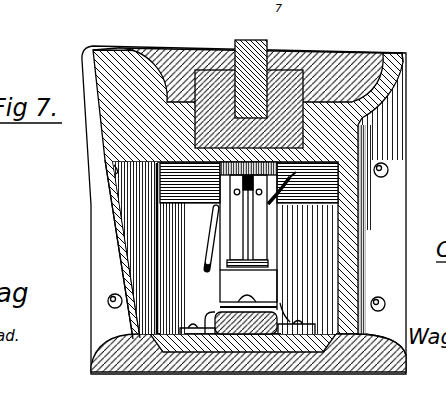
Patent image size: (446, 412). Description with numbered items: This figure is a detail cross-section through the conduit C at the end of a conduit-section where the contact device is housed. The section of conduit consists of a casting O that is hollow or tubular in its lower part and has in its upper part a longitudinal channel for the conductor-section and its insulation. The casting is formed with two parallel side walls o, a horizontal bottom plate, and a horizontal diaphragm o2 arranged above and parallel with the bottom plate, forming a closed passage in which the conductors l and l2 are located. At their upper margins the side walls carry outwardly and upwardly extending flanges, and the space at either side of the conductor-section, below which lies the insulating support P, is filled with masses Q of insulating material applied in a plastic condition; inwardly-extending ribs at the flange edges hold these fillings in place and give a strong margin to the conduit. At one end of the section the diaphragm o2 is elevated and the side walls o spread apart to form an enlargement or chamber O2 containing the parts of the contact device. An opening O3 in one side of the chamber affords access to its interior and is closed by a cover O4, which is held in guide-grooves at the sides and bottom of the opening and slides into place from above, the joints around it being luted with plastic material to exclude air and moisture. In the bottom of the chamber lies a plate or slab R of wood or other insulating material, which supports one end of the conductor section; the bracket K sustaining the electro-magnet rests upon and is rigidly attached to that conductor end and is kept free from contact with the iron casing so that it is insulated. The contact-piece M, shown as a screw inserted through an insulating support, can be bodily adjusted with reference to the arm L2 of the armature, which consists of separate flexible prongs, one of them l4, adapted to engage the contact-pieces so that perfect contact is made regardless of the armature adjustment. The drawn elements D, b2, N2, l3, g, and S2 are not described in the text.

The casting O is at (337, 136).
The conduit C is at (248, 198).
The insulating material masses Q is at (164, 53).
The insulating support P is at (249, 109).
The stem D is at (250, 42).
The cover O4 is at (113, 52).
The opening O3 is at (125, 249).
The chamber O2 is at (246, 237).
The side walls o is at (348, 255).
The plate or slab R is at (360, 334).
The base band b2 is at (243, 351).
The cross block N2 is at (225, 248).
The horizontal diaphragm o2 is at (200, 164).
The conductor l is at (285, 188).
The left bar l3 is at (237, 206).
The flexible arm or prong l4 is at (256, 216).
The contact-piece M is at (267, 195).
The arm of the armature L2 is at (246, 257).
The bracket K is at (248, 288).
The hatched pad g is at (280, 309).
The floor piece S2 is at (172, 310).
The conductor l2 is at (206, 257).